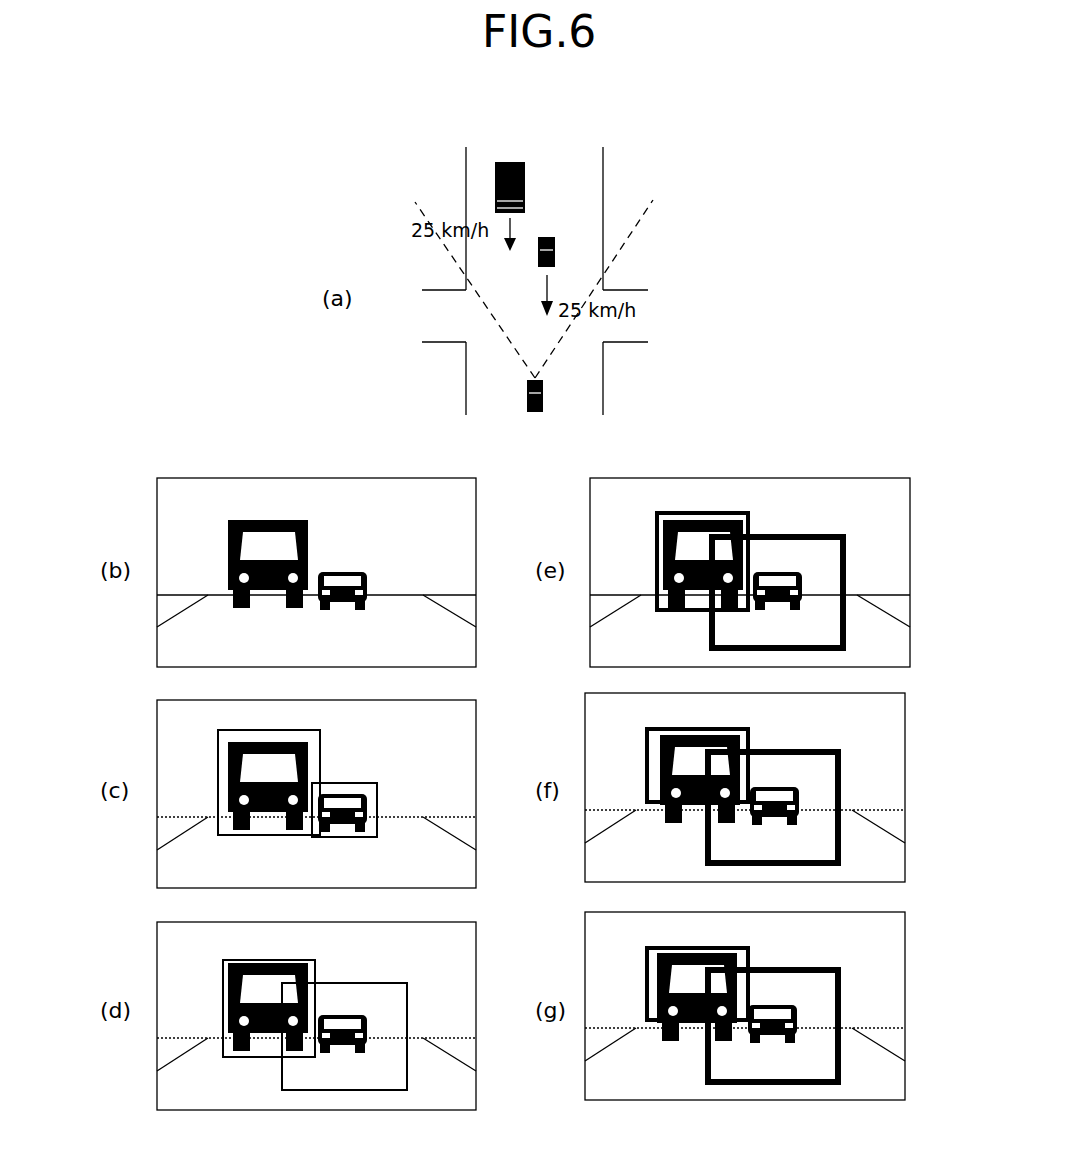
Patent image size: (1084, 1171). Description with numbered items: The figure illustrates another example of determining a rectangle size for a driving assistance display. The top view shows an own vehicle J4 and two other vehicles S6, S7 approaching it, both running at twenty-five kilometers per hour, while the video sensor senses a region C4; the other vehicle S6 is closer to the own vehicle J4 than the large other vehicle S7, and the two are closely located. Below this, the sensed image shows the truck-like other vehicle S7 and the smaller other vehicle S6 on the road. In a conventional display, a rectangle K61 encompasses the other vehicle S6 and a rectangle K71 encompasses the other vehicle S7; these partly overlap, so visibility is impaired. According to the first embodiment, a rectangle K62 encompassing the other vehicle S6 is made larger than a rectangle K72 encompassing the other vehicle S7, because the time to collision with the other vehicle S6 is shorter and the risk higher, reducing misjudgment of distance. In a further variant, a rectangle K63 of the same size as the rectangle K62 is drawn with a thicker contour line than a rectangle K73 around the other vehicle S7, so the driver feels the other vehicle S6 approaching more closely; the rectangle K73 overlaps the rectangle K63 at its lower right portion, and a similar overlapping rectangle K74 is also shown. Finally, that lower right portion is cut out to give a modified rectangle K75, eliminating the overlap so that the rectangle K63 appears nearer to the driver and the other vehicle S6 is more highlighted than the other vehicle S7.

The other vehicle S7 is at (505, 162).
The other vehicle S6 is at (550, 237).
The own vehicle J4 is at (543, 398).
The region C4 is at (633, 233).
The rectangle K71 is at (262, 835).
The rectangle K61 is at (377, 823).
The rectangle K72 is at (248, 1057).
The rectangle K62 is at (410, 1067).
The rectangle K73 is at (687, 612).
The rectangle K63 is at (843, 618).
The rectangle K74 is at (695, 810).
The rectangle K75 is at (690, 1022).